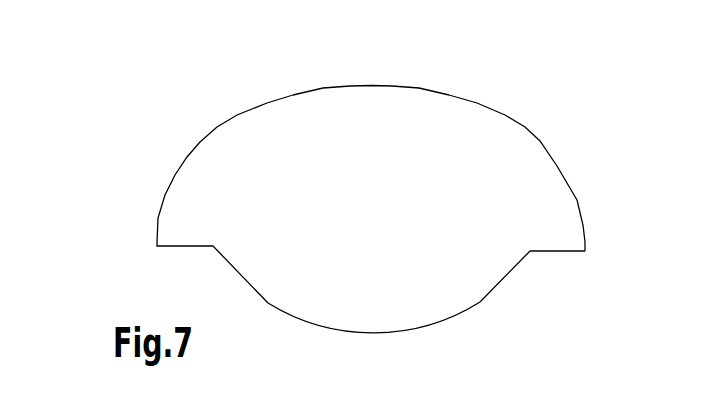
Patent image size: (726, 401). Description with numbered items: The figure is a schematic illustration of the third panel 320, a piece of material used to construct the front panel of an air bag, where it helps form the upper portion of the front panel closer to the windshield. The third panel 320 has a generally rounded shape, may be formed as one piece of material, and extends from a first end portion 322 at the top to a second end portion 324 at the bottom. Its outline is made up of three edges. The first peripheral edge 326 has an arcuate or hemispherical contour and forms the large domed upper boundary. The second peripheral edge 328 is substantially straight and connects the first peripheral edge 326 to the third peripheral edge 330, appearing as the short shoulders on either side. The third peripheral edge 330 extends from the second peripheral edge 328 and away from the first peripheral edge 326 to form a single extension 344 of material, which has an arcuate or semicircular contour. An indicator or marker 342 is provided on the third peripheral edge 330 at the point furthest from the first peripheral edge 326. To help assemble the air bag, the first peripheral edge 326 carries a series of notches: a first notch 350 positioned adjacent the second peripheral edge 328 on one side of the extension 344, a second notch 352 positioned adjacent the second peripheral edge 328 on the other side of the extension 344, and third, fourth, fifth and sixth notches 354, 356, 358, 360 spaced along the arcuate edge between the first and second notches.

The third panel 320 is at (560, 120).
The first end portion 322 is at (375, 82).
The second end portion 324 is at (450, 330).
The first peripheral edge 326 is at (567, 183).
The second peripheral edge 328 is at (178, 250).
The third peripheral edge 330 is at (270, 305).
The indicator or marker 342 is at (370, 323).
The extension 344 is at (480, 263).
The first notch 350 is at (157, 237).
The second notch 352 is at (586, 240).
The third notch 354 is at (267, 103).
The fourth notch 356 is at (325, 90).
The fifth notch 358 is at (418, 90).
The sixth notch 360 is at (475, 103).